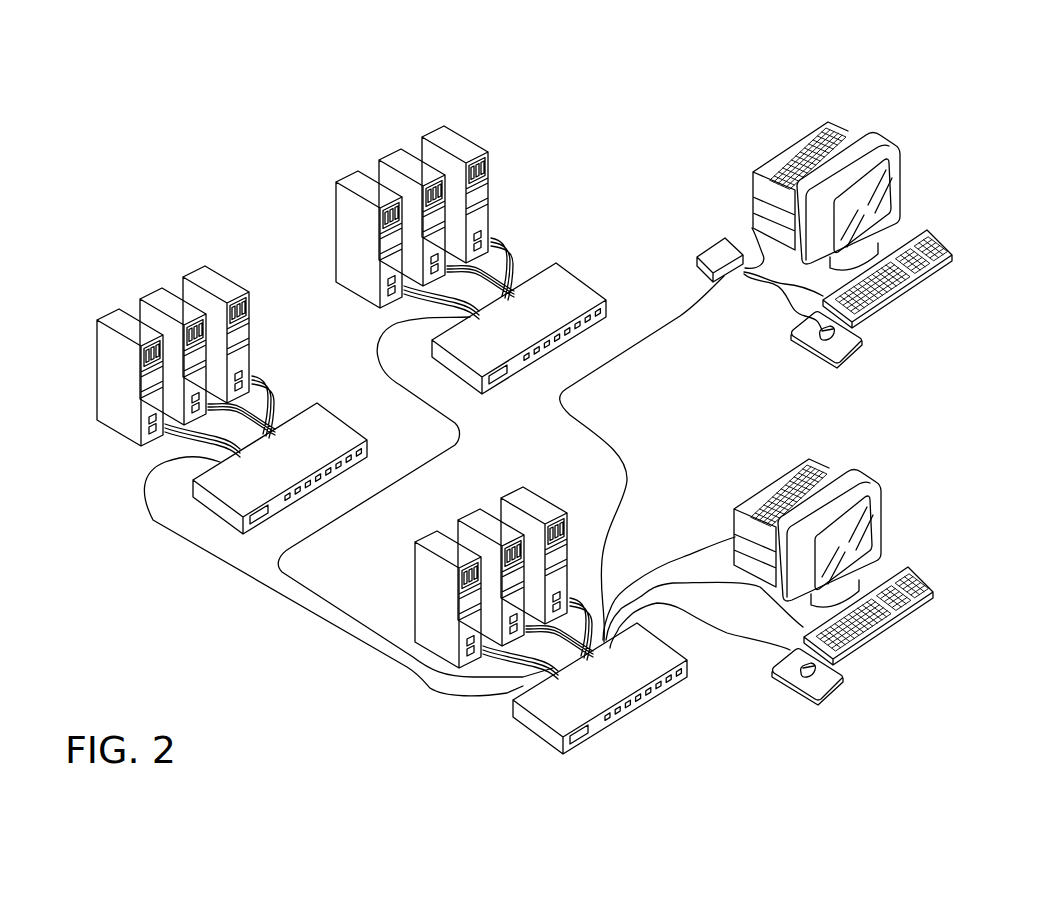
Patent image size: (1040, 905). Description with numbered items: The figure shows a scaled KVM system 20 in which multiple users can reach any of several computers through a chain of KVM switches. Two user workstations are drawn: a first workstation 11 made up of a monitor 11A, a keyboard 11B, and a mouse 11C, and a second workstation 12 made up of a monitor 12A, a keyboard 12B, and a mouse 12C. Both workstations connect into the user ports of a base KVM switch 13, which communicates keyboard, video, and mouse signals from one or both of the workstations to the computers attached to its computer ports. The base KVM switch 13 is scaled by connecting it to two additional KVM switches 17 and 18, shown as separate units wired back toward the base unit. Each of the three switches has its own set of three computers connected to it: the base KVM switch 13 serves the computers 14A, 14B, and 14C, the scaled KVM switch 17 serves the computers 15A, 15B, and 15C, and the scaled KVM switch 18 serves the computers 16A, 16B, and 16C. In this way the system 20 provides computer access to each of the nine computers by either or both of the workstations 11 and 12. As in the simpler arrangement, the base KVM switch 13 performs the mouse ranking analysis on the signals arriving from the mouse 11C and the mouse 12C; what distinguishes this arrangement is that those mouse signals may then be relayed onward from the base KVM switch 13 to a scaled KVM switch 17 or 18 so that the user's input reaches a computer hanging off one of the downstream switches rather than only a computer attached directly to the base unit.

The system 20 is at (222, 155).
The first workstation 11 is at (968, 88).
The monitor 11A is at (797, 145).
The keyboard 11B is at (903, 298).
The mouse 11C is at (830, 344).
The second workstation 12 is at (953, 445).
The monitor 12A is at (778, 478).
The keyboard 12B is at (895, 620).
The mouse 12C is at (808, 675).
The KVM switch 13 is at (527, 733).
The computer 14A is at (424, 591).
The computer 14B is at (471, 567).
The computer 14C is at (516, 544).
The computer 15A is at (104, 368).
The computer 15B is at (150, 346).
The computer 15C is at (196, 322).
The computer 16A is at (343, 229).
The computer 16B is at (389, 208).
The computer 16C is at (434, 182).
The KVM switch 17 is at (220, 516).
The KVM switch 18 is at (588, 283).